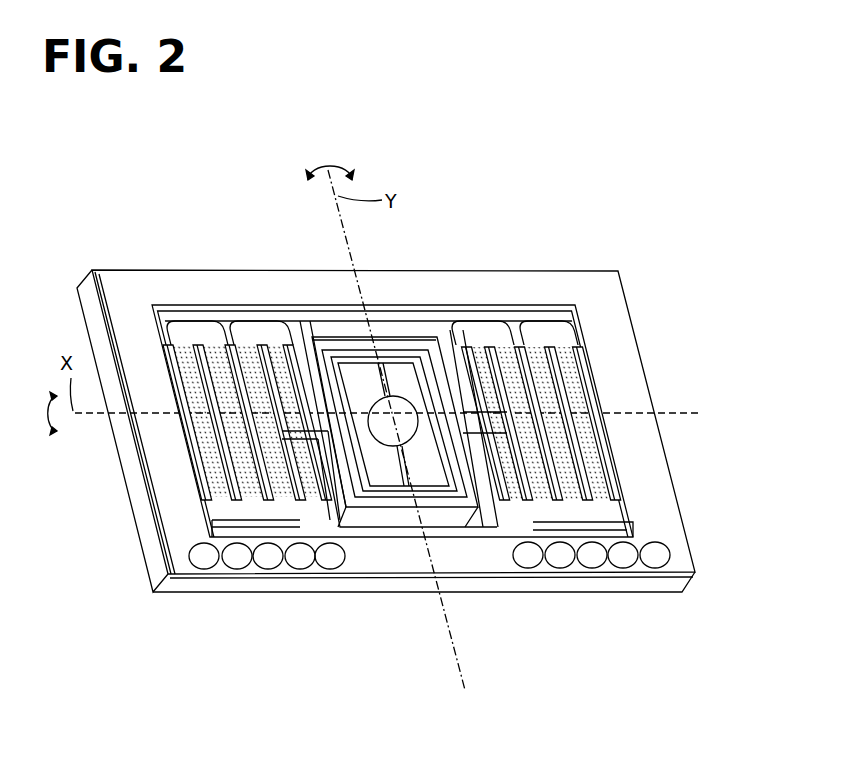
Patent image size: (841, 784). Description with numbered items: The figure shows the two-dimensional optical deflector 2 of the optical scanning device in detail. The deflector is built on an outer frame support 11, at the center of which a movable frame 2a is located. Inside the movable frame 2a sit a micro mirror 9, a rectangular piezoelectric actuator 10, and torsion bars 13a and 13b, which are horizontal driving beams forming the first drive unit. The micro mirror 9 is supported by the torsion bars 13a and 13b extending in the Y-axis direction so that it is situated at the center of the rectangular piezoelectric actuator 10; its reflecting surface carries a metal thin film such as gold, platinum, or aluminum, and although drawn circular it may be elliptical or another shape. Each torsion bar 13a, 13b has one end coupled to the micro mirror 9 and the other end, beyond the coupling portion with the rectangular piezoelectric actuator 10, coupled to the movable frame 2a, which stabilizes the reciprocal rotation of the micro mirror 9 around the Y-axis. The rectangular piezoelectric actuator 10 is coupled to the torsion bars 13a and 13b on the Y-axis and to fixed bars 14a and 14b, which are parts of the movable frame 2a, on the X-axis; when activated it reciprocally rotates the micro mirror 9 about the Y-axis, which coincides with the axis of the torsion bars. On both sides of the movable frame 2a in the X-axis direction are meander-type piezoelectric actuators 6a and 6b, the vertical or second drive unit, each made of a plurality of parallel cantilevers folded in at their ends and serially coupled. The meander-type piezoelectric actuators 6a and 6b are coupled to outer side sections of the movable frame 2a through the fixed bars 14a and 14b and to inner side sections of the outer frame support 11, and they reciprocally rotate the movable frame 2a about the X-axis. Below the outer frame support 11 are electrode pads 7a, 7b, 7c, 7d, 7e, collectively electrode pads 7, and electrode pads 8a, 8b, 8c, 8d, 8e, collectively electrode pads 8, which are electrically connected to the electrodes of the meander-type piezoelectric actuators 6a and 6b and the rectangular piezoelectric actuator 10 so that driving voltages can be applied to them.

The two-dimensional optical deflector 2 is at (98, 250).
The movable frame 2a is at (300, 327).
The meander-type piezoelectric actuator 6a is at (202, 333).
The meander-type piezoelectric actuator 6b is at (548, 328).
The electrode pads 7 is at (264, 609).
The electrode pad 7a is at (205, 562).
The electrode pad 7b is at (238, 562).
The electrode pad 7c is at (269, 562).
The electrode pad 7d is at (301, 562).
The electrode pad 7e is at (330, 589).
The electrode pads 8 is at (596, 609).
The electrode pad 8a is at (529, 561).
The electrode pad 8b is at (561, 561).
The electrode pad 8c is at (593, 561).
The electrode pad 8d is at (624, 561).
The electrode pad 8e is at (657, 589).
The micro mirror 9 is at (378, 445).
The rectangular piezoelectric actuator 10 is at (458, 497).
The outer frame support 11 is at (665, 490).
The torsion bar 13a is at (390, 392).
The torsion bar 13b is at (388, 470).
The fixed bar 14a is at (290, 440).
The fixed bar 14b is at (495, 433).